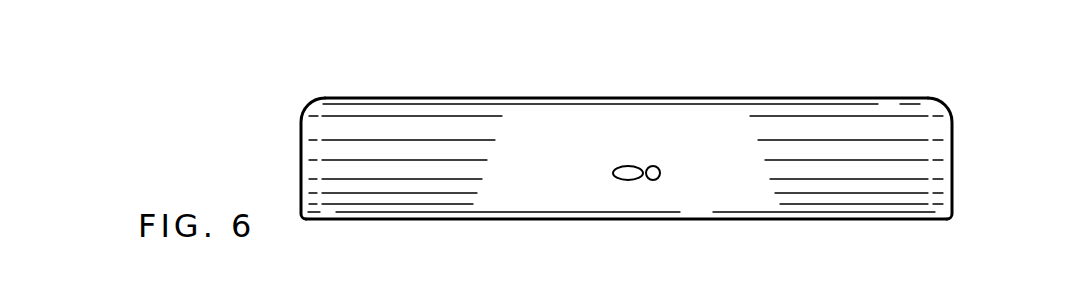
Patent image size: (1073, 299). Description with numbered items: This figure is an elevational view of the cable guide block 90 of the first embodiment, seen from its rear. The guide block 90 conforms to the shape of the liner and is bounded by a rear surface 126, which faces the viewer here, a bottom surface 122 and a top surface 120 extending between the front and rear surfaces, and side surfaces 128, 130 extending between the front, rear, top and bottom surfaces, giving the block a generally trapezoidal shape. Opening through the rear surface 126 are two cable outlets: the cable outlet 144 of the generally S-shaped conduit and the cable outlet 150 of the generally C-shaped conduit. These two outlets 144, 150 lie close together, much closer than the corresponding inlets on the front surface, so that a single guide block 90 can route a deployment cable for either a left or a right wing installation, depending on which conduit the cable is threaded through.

The cable guide block 90 is at (630, 154).
The top surface 120 is at (810, 219).
The bottom surface 122 is at (708, 100).
The rear surface 126 is at (690, 149).
The side surface 128 is at (301, 165).
The side surface 130 is at (952, 165).
The cable outlet 144 is at (660, 180).
The cable outlet 150 is at (613, 170).